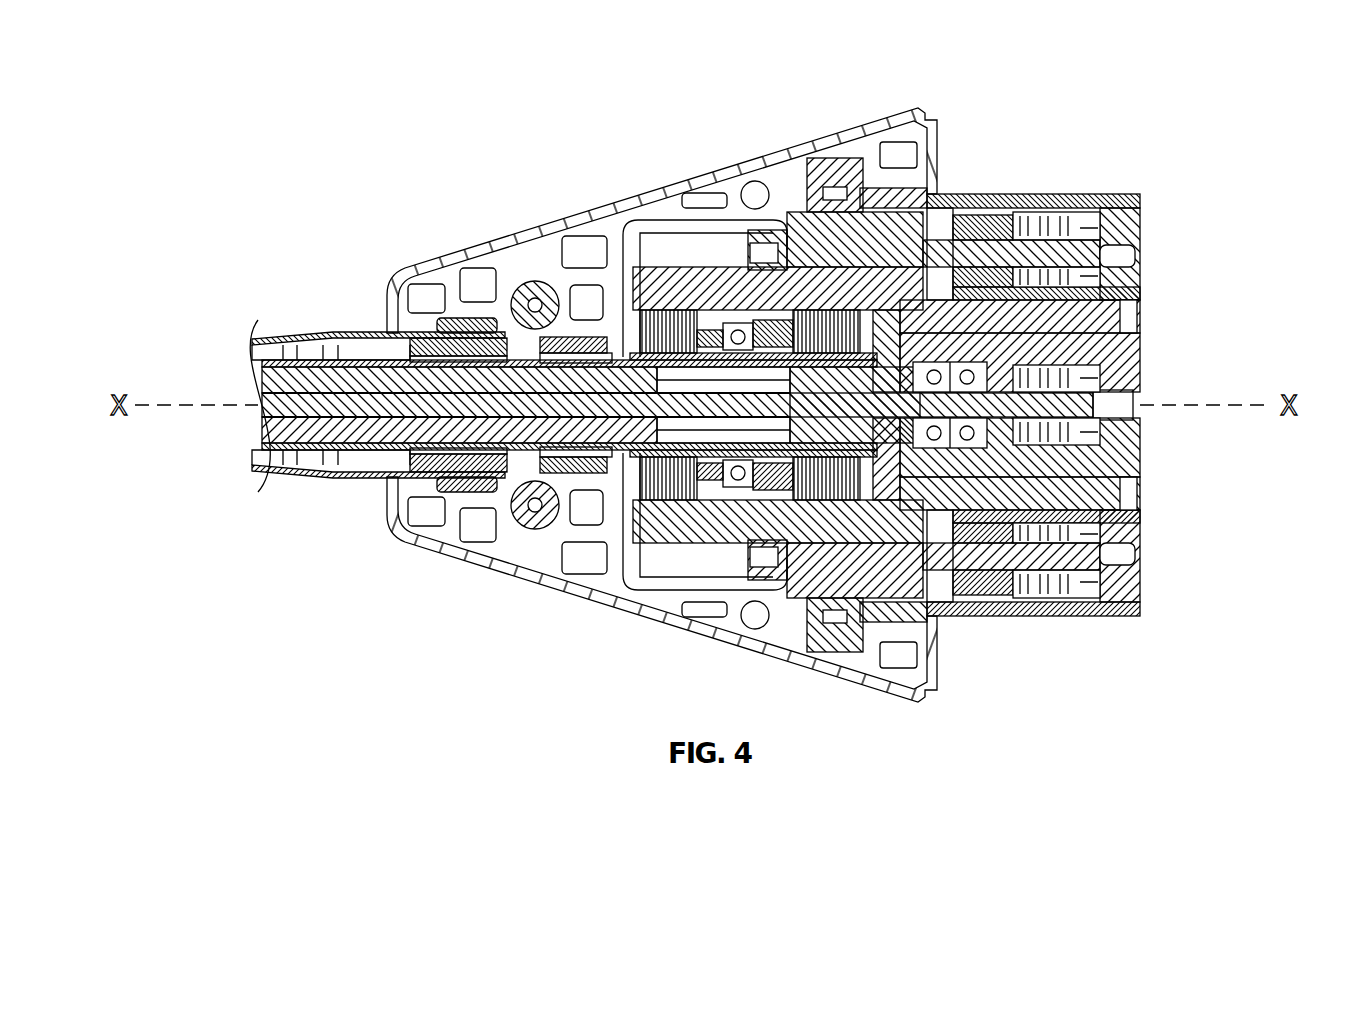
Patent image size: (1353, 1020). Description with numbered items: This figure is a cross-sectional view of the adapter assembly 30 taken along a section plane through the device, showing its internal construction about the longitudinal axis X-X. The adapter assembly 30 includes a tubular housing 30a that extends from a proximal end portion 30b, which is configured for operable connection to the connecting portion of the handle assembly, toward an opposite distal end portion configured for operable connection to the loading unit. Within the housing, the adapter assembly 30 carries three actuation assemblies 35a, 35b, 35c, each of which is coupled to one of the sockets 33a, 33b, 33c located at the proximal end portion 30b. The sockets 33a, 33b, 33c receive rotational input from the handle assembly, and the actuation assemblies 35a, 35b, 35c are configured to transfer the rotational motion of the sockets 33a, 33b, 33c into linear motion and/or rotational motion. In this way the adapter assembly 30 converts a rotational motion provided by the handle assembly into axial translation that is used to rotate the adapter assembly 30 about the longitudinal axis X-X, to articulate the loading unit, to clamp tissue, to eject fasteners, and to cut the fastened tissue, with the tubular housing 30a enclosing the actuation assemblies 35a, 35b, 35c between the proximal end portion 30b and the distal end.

The adapter assembly 30 is at (472, 247).
The tubular housing 30a is at (355, 330).
The proximal end portion 30b is at (1102, 198).
The socket 33a is at (1138, 263).
The socket 33b is at (1136, 408).
The socket 33c is at (1134, 563).
The actuation assembly 35a is at (985, 250).
The actuation assembly 35b is at (489, 406).
The actuation assembly 35c is at (965, 530).